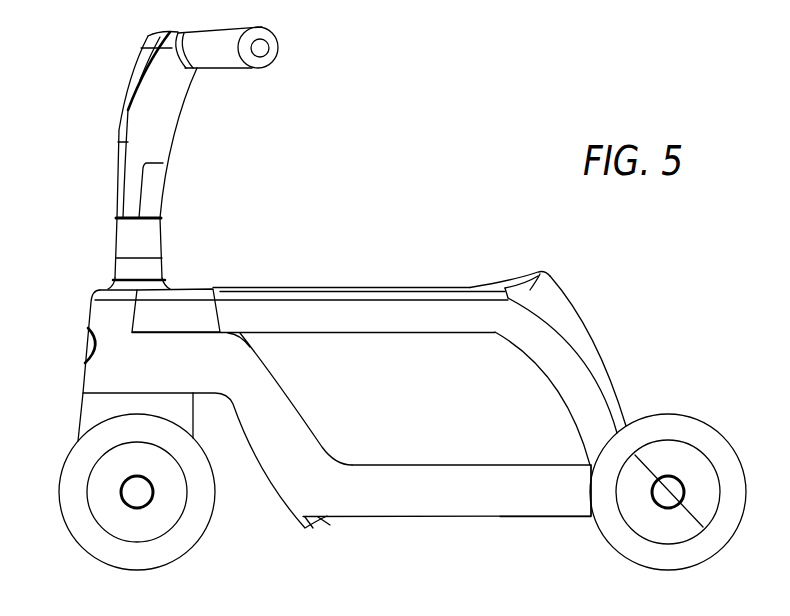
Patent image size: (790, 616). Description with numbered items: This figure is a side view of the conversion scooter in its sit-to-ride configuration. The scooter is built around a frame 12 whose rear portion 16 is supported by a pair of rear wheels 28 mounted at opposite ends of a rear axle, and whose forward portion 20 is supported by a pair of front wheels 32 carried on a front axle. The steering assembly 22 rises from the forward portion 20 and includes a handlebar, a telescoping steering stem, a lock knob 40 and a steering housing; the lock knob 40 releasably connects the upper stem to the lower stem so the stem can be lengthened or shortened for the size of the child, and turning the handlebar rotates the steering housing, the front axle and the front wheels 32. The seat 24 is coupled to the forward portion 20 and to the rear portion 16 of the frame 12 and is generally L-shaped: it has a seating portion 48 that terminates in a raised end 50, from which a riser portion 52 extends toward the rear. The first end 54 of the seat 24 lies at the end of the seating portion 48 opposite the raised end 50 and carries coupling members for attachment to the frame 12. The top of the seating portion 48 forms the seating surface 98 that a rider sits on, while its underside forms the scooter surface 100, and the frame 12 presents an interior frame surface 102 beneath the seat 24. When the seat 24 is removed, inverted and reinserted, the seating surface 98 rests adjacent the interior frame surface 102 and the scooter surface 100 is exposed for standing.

The frame 12 is at (374, 500).
The rear portion 16 is at (552, 515).
The forward portion 20 is at (82, 378).
The steering assembly 22 is at (131, 115).
The seat 24 is at (416, 287).
The rear wheels 28 is at (703, 552).
The front wheels 32 is at (84, 528).
The lock knob 40 is at (113, 268).
The seating portion 48 is at (335, 287).
The raised end 50 is at (540, 275).
The riser portion 52 is at (587, 342).
The first end 54 is at (222, 287).
The seating surface 98 is at (277, 287).
The scooter surface 100 is at (349, 332).
The interior frame surface 102 is at (388, 465).